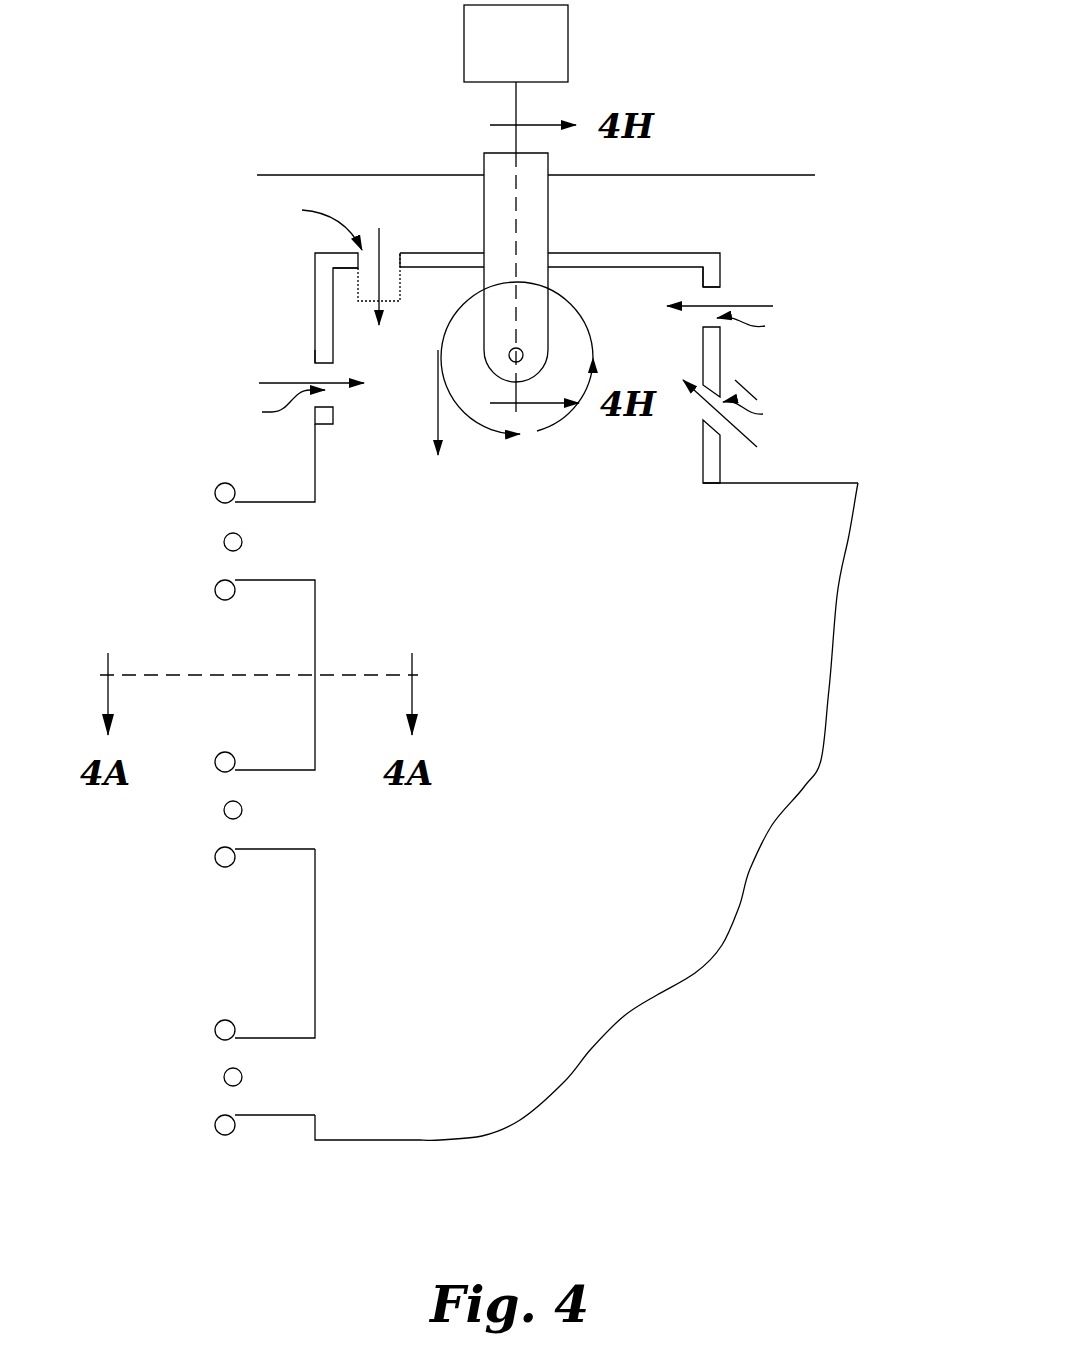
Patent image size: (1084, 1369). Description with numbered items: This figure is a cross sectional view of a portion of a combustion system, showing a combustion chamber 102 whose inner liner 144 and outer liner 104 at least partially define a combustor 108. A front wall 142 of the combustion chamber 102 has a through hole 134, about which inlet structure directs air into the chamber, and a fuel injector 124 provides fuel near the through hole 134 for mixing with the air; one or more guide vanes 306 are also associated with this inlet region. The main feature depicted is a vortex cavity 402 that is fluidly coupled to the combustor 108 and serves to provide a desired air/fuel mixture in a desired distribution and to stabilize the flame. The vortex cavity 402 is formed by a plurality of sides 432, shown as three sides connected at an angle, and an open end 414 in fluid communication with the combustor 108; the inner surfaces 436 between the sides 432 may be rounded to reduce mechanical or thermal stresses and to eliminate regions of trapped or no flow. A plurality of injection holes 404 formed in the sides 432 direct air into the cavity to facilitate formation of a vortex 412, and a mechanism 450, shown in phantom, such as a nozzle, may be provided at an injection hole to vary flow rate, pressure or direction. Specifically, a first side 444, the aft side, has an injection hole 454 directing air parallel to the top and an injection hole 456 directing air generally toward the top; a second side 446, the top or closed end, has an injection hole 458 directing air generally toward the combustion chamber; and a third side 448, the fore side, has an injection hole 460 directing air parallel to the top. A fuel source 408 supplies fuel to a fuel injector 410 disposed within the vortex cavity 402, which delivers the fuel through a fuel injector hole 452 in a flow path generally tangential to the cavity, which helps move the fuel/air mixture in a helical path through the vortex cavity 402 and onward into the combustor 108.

The combustion chamber 102 is at (393, 1160).
The outer liner 104 is at (833, 482).
The combustor 108 is at (630, 655).
The fuel injector 124 is at (222, 1077).
The through hole 134 is at (297, 830).
The front wall 142 is at (315, 935).
The inner liner 144 is at (363, 1142).
The guide vanes 306 is at (278, 1117).
The vortex cavity 402 is at (733, 380).
The injection holes 404 is at (516, 316).
The fuel source 408 is at (570, 43).
The fuel injector 410 is at (527, 384).
The vortex 412 is at (438, 428).
The open end 414 is at (633, 455).
The sides 432 is at (315, 308).
The inner surfaces 436 is at (702, 279).
The first side (aft) 444 is at (720, 365).
The second side (top or closed end) 446 is at (615, 253).
The third side (fore) 448 is at (315, 360).
The mechanism 450 is at (357, 283).
The fuel injector hole 452 is at (523, 353).
The injection hole 454 is at (723, 470).
The injection hole 456 is at (717, 276).
The injection hole 458 is at (400, 262).
The injection hole 460 is at (315, 418).